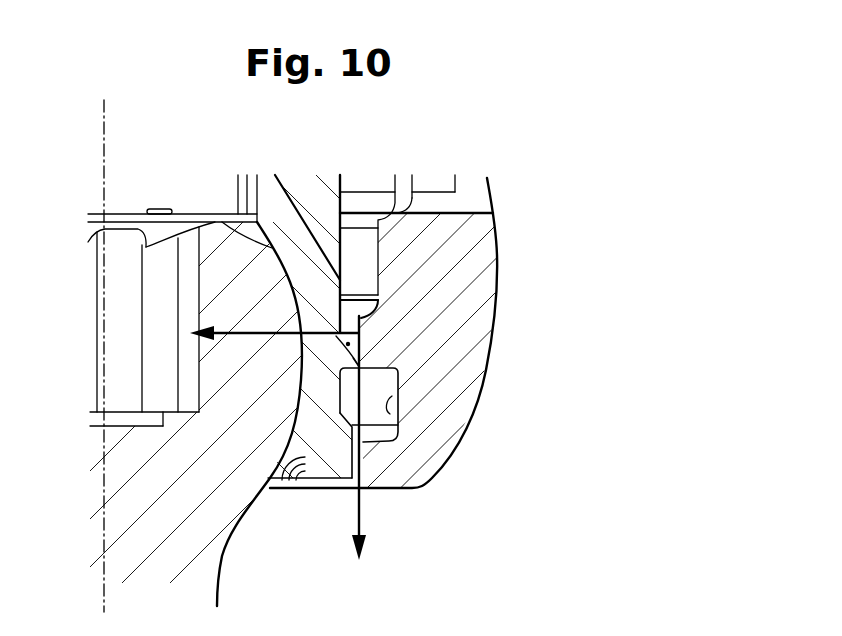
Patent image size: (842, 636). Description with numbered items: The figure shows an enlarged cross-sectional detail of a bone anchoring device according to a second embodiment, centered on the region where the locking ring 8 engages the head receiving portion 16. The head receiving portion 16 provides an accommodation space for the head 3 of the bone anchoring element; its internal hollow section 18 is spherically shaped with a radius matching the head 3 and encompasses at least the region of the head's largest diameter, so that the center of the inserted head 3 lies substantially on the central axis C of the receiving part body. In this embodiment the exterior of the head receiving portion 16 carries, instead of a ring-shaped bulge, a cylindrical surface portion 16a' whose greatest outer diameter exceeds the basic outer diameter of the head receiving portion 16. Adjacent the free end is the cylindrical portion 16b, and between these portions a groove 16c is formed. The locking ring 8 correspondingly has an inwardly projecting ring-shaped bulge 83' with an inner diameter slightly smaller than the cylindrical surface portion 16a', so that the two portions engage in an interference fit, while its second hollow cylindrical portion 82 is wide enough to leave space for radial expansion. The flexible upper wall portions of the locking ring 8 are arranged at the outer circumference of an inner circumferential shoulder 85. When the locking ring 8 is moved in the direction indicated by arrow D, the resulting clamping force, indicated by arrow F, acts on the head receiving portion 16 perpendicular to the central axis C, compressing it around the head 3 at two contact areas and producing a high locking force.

The central axis C is at (104, 118).
The head 3 is at (218, 482).
The locking ring 8 is at (503, 248).
The head receiving portion 16 is at (304, 182).
The cylindrical surface portion 16a' is at (455, 321).
The cylindrical portion 16b is at (338, 488).
The groove 16c is at (341, 387).
The internal hollow section 18 is at (237, 214).
The second hollow cylindrical portion 82 is at (390, 410).
The inwardly projecting ring-shaped bulge 83' is at (455, 346).
The inner circumferential shoulder 85 is at (468, 208).
The clamping force arrow F is at (250, 333).
The locking ring movement direction arrow D is at (362, 507).